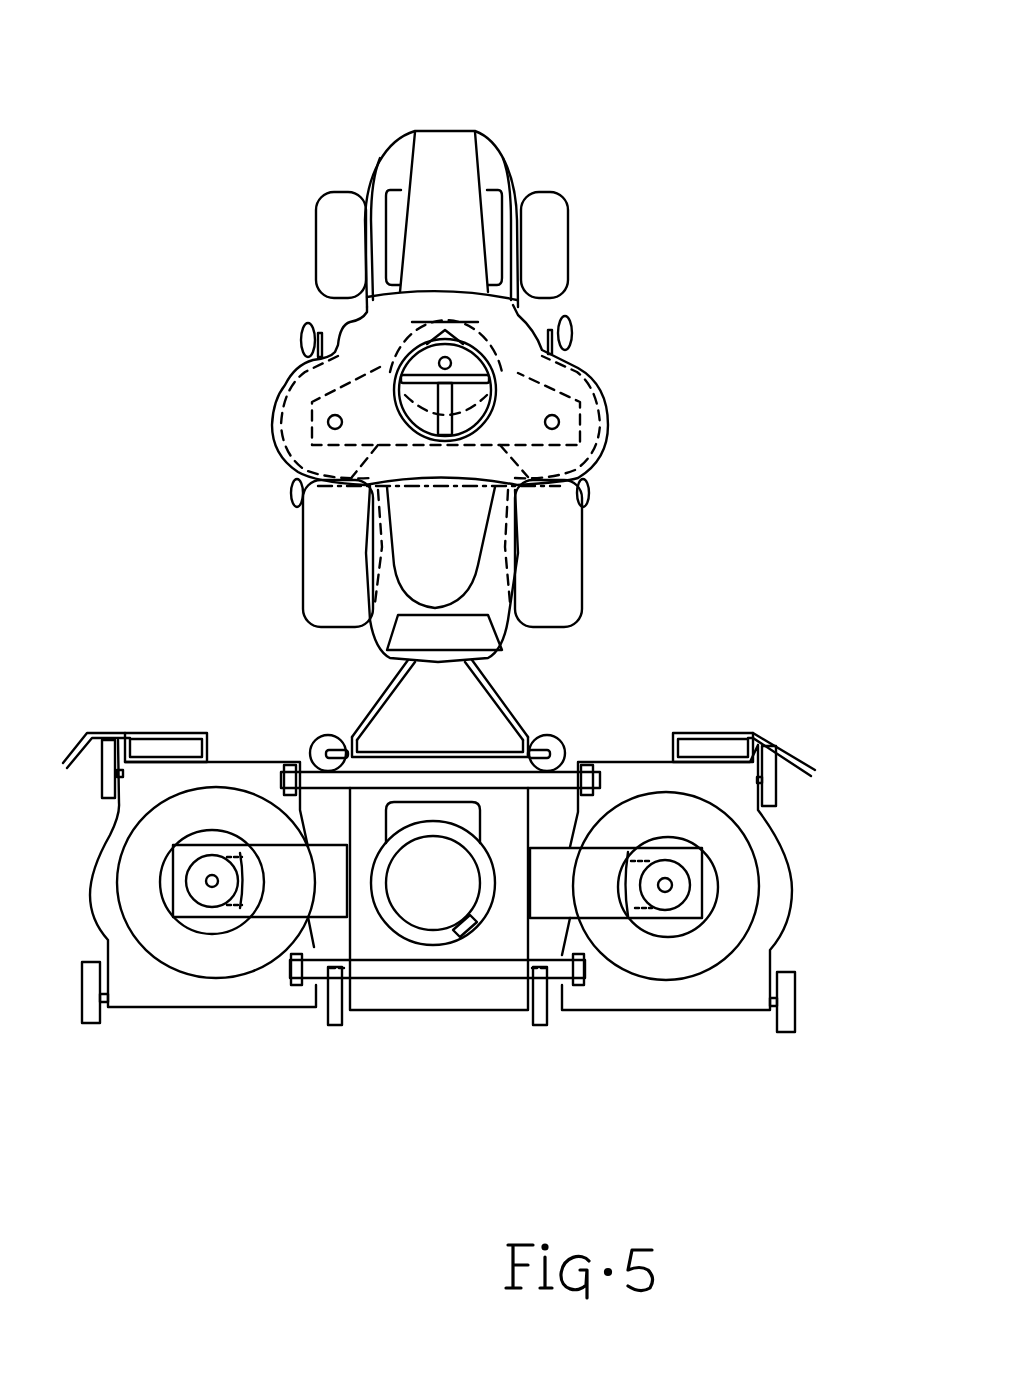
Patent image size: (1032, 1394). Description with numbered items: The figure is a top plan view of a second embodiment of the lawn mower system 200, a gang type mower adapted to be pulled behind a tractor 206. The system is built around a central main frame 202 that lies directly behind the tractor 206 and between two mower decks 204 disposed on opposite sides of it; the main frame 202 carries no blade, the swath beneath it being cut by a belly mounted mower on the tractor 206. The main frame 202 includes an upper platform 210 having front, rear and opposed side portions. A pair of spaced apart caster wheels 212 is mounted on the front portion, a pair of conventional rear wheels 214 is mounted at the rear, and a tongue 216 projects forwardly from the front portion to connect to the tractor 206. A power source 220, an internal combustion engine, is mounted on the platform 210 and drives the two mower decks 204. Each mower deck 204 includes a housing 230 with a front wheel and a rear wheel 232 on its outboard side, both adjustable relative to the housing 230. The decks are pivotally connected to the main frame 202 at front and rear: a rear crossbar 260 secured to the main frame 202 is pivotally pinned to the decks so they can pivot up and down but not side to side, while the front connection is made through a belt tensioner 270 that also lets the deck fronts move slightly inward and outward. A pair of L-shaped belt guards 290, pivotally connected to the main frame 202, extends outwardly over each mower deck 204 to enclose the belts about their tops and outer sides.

The lawn mower system 200 is at (709, 680).
The main frame 202 is at (414, 950).
The mower decks 204 is at (468, 962).
The tractor 206 is at (624, 136).
The upper platform 210 is at (378, 997).
The caster wheels 212 is at (322, 742).
The rear wheels 214 is at (327, 1012).
The tongue 216 is at (495, 685).
The power source 220 is at (449, 835).
The housing 230 is at (765, 930).
The front wheel and rear wheel 232 is at (777, 787).
The rear crossbar 260 is at (450, 970).
The belt tensioner 270 is at (403, 743).
The belt guards 290 is at (288, 857).